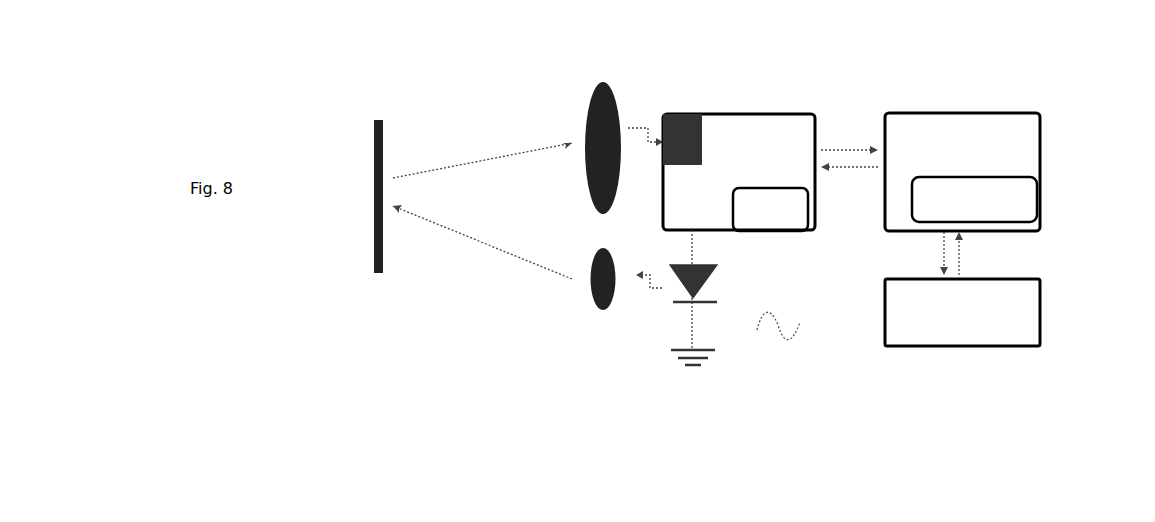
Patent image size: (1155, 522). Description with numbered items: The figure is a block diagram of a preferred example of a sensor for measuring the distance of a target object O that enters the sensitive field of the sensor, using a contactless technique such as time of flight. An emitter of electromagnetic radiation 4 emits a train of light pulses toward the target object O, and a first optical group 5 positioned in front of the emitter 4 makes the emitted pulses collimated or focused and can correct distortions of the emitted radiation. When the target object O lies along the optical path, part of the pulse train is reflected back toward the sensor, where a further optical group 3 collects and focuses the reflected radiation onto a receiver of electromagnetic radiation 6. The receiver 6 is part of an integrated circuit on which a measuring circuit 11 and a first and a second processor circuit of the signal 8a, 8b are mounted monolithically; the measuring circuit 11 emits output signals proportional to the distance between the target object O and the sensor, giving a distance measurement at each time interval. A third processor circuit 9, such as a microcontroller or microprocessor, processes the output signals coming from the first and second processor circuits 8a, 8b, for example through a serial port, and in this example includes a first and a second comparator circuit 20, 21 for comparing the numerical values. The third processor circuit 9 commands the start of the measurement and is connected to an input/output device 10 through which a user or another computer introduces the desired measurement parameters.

The target object O is at (374, 138).
The further optical group 3 is at (585, 117).
The measuring circuit 11 is at (688, 133).
The receiver of electromagnetic radiation 6 is at (739, 132).
The first processor circuit of the signal 8a is at (770, 209).
The second processor circuit of the signal 8b is at (770, 209).
The third processor circuit 9 is at (974, 147).
The first comparator circuit 20 is at (974, 199).
The second comparator circuit 21 is at (974, 199).
The input/output device 10 is at (1040, 317).
The first optical group 5 is at (593, 298).
The emitter of electromagnetic radiation 4 is at (673, 298).